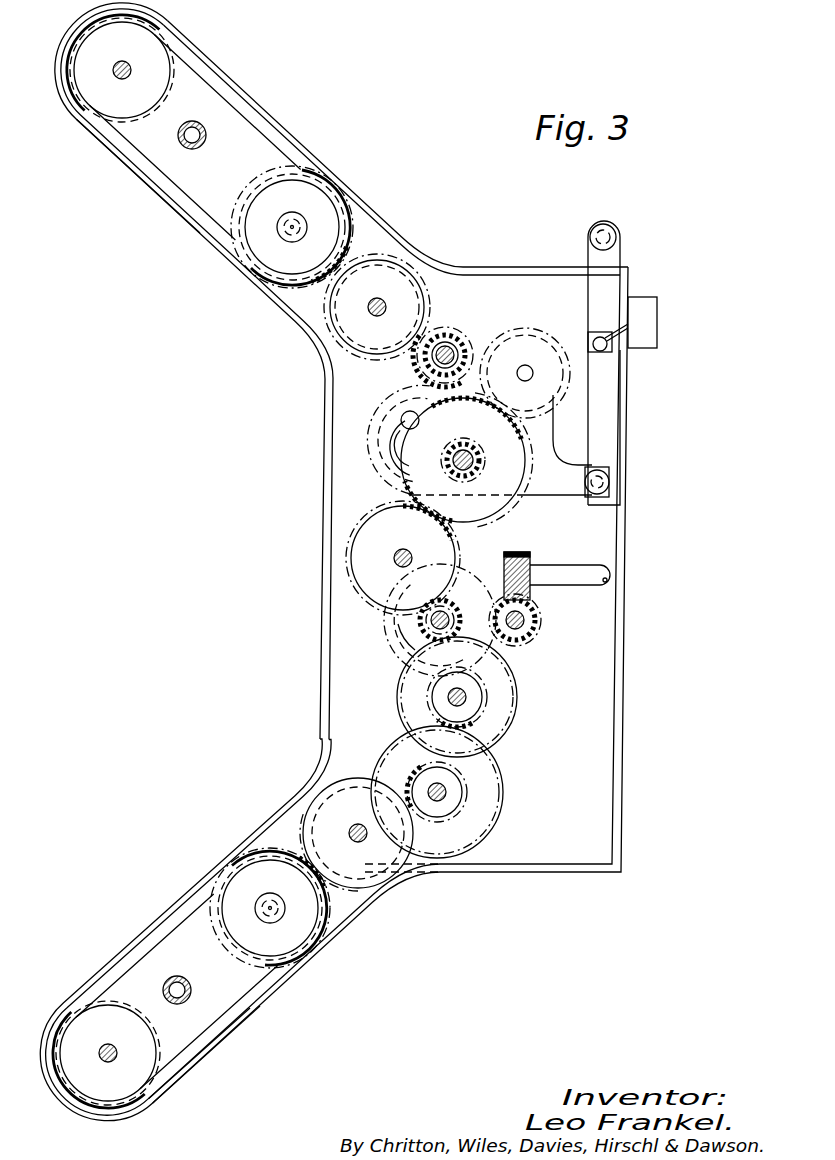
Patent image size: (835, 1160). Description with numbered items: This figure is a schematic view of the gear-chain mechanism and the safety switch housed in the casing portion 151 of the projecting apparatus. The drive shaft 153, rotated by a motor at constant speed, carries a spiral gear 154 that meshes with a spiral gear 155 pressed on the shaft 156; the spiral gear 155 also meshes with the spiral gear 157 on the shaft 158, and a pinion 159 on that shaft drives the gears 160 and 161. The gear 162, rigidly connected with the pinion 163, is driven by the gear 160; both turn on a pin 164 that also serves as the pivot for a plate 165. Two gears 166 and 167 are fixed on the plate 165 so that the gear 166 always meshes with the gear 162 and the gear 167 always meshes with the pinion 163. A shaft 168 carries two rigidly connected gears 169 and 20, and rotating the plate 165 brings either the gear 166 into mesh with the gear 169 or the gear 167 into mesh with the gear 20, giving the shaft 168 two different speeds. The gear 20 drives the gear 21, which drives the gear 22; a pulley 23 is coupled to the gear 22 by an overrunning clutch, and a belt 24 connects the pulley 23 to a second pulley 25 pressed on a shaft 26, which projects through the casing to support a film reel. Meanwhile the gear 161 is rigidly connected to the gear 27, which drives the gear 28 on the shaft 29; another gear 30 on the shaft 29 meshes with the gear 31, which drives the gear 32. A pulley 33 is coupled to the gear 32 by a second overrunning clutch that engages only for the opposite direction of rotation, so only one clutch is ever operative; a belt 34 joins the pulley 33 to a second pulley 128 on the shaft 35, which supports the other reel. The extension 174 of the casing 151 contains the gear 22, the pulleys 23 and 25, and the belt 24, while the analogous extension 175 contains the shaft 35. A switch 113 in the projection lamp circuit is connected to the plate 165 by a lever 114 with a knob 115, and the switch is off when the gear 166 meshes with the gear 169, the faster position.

The gear 20 is at (458, 327).
The gear 21 is at (323, 317).
The gear 22 is at (352, 205).
The pulley 23 is at (265, 248).
The belt 24 is at (243, 120).
The second pulley 25 is at (153, 30).
The shaft 26 is at (121, 75).
The gear 27 is at (487, 683).
The gear 28 is at (504, 764).
The shaft 29 is at (448, 796).
The gear 30 is at (470, 789).
The gear 31 is at (348, 775).
The gear 32 is at (326, 890).
The pulley 33 is at (222, 928).
The belt 34 is at (210, 1022).
The shaft 35 is at (108, 1045).
The switch 113 is at (643, 328).
The lever 114 is at (622, 232).
The knob 115 is at (590, 240).
The second pulley 128 is at (80, 1097).
The casing portion 151 is at (467, 266).
The drive shaft 153 is at (565, 567).
The spiral gear 154 is at (513, 553).
The spiral gear 155 is at (534, 628).
The shaft 156 is at (533, 613).
The spiral gear 157 is at (385, 619).
The shaft 158 is at (447, 614).
The pinion 159 is at (430, 636).
The gear 160 is at (370, 506).
The gear 161 is at (517, 716).
The gear 162 is at (526, 490).
The pinion 163 is at (481, 470).
The pin 164 is at (469, 457).
The plate 165 is at (388, 474).
The gear 166 is at (528, 330).
The gear 167 is at (380, 402).
The shaft 168 is at (452, 348).
The gear 169 is at (445, 330).
The extension 174 is at (138, 187).
The extension 175 is at (273, 1027).